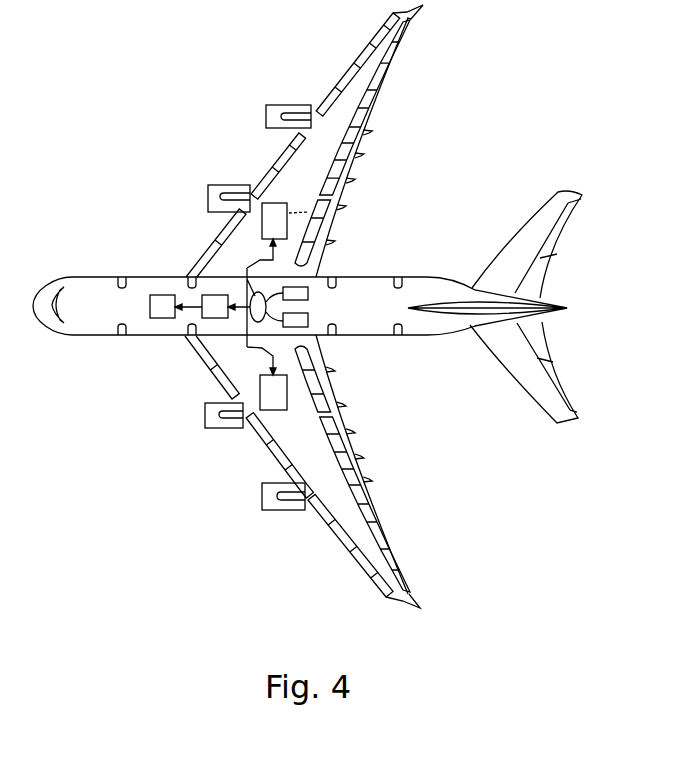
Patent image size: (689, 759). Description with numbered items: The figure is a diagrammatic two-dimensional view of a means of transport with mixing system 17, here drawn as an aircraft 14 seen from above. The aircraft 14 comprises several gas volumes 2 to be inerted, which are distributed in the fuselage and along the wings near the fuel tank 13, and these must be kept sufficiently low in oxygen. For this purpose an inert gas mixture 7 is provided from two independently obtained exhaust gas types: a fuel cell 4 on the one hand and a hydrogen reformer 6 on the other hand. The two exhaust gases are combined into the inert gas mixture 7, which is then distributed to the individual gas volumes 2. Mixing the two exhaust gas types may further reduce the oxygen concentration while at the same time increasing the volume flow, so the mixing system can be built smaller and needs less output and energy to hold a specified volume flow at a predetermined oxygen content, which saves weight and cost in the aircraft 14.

The means of transport with mixing system 17 is at (307, 306).
The aircraft 14 is at (339, 141).
The fuel tank 13 is at (330, 209).
The gas volume to be inerted 2 is at (160, 319).
The inert gas mixture 7 is at (246, 268).
The hydrogen reformer 6 is at (310, 291).
The fuel cell 4 is at (310, 327).